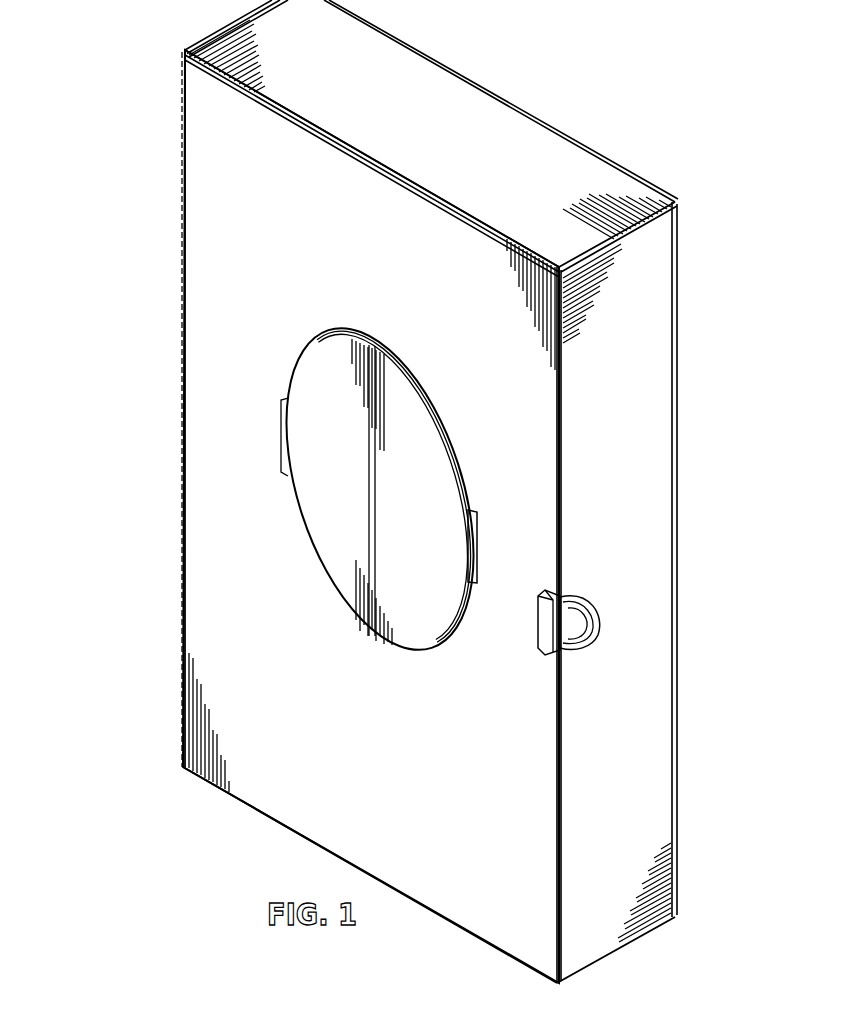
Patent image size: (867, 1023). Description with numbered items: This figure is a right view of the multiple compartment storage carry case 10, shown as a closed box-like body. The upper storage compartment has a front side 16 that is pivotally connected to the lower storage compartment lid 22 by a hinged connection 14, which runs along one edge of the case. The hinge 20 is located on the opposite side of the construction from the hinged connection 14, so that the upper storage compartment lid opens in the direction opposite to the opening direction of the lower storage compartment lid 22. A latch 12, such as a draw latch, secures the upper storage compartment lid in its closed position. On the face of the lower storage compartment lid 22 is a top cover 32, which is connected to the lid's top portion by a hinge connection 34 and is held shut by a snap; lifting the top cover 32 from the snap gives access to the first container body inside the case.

The multiple compartment storage carry case 10 is at (708, 130).
The latch 12 is at (584, 620).
The hinged connection 14 is at (678, 433).
The front side 16 is at (642, 800).
The hinge 20 is at (183, 128).
The lower storage compartment lid 22 is at (243, 595).
The top cover 32 is at (312, 352).
The hinge connection 34 is at (472, 537).